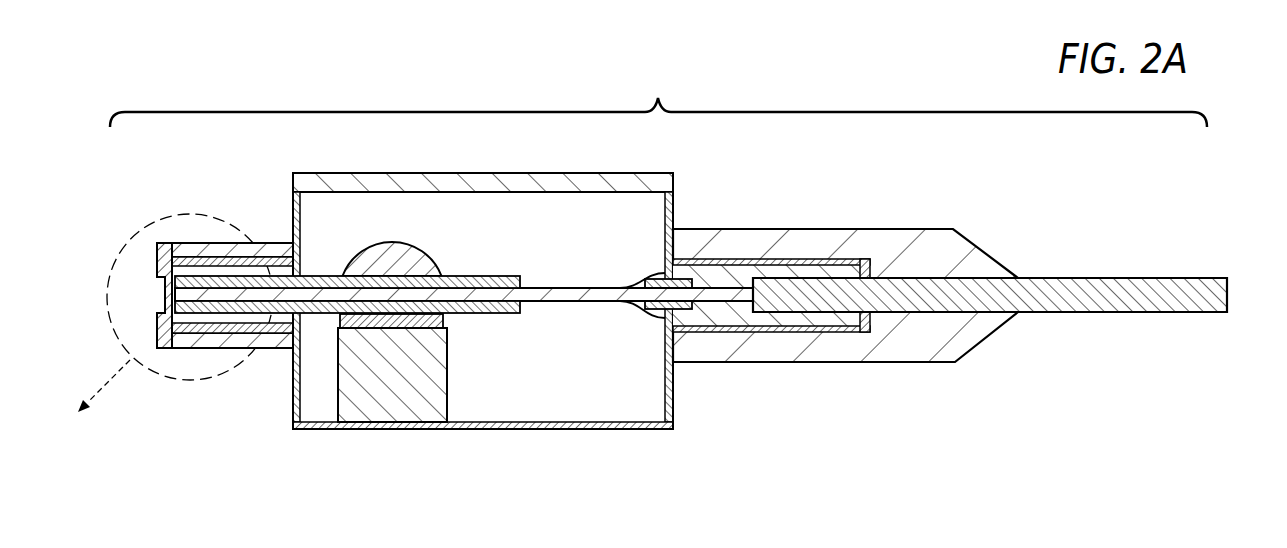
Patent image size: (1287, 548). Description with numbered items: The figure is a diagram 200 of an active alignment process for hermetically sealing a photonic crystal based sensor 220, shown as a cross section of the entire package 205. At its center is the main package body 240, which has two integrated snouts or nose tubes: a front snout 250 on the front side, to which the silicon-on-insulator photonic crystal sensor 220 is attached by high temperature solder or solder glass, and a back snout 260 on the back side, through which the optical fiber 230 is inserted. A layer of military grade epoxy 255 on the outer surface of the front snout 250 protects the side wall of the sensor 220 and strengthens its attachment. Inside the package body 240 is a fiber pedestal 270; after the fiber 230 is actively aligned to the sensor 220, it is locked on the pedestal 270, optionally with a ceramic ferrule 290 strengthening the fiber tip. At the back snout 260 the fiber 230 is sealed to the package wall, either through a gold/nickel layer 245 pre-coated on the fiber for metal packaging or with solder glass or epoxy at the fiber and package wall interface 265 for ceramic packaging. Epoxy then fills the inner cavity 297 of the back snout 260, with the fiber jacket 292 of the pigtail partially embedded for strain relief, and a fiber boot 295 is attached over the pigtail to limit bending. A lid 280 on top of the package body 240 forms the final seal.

The diagram 200 is at (635, 336).
The entire package 205 is at (658, 98).
The photonic crystal sensor 220 is at (170, 305).
The optical fiber 230 is at (581, 287).
The main package body 240 is at (483, 336).
The gold/nickel layer 245 is at (686, 312).
The front snout 250 is at (215, 332).
The epoxy layer 255 is at (207, 243).
The back snout 260 is at (778, 334).
The fiber and package wall interface 265 is at (648, 277).
The fiber pedestal 270 is at (390, 408).
The lid 280 is at (445, 173).
The ceramic ferrule 290 is at (485, 315).
The fiber jacket 292 is at (1118, 313).
The fiber boot 295 is at (923, 243).
The inner cavity 297 is at (720, 272).